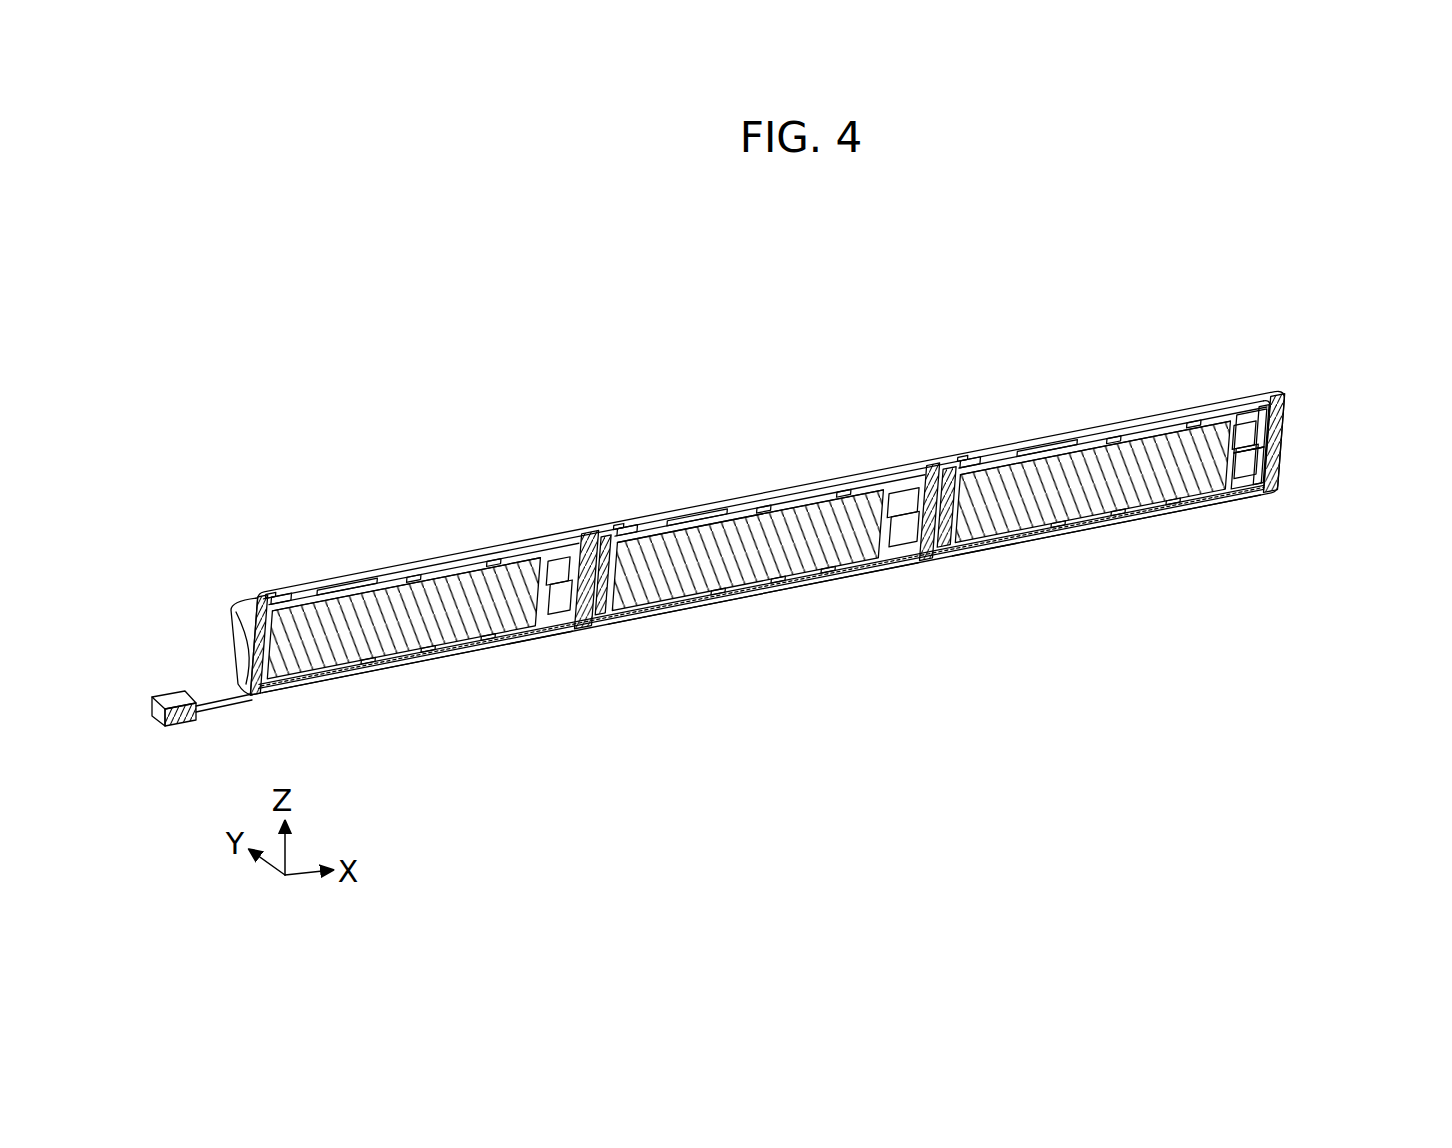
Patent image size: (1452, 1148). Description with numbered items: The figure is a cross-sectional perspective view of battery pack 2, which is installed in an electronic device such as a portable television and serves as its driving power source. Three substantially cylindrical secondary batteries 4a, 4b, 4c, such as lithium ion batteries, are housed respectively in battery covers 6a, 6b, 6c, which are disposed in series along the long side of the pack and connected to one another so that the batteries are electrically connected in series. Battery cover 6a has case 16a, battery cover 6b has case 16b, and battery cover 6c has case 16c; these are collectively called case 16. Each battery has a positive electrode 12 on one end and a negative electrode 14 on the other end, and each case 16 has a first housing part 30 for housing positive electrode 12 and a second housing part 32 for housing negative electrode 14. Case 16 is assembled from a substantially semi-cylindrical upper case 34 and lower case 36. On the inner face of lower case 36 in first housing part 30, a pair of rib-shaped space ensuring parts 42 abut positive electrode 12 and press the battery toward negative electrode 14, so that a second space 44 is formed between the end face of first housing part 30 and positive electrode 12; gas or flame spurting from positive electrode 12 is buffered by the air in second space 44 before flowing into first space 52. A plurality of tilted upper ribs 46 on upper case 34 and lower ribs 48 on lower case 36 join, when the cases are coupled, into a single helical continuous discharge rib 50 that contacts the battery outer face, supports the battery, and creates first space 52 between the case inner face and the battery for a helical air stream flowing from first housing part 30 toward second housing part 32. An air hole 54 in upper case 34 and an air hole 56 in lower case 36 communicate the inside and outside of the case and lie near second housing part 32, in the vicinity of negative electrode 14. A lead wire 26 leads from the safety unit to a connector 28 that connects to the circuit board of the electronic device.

The battery pack 2 is at (935, 300).
The battery 4a is at (1075, 490).
The battery 4b is at (740, 550).
The battery 4c is at (400, 615).
The battery cover 6a is at (1170, 420).
The battery cover 6b is at (845, 480).
The battery cover 6c is at (515, 540).
The positive electrode 12 is at (600, 556).
The negative electrode 14 is at (245, 615).
The case 16 is at (1368, 440).
The case 16a is at (1035, 555).
The case 16b is at (690, 620).
The case 16c is at (330, 690).
The lead wire 26 is at (233, 710).
The connector 28 is at (172, 727).
The first housing part 30 is at (540, 563).
The second housing part 32 is at (265, 598).
The upper case 34 is at (1285, 458).
The lower case 36 is at (1285, 488).
The space ensuring part 42 is at (555, 600).
The second space 44 is at (580, 620).
The upper rib 46 is at (415, 585).
The lower rib 48 is at (495, 650).
The discharge rib 50 is at (430, 655).
The first space 52 is at (468, 590).
The air hole 54 is at (280, 598).
The air hole 56 is at (280, 685).